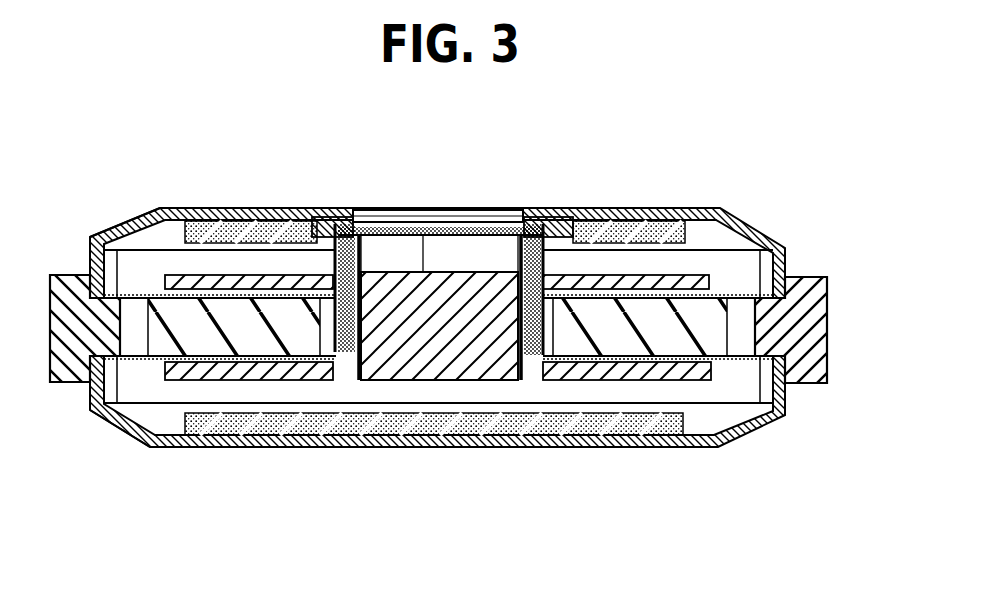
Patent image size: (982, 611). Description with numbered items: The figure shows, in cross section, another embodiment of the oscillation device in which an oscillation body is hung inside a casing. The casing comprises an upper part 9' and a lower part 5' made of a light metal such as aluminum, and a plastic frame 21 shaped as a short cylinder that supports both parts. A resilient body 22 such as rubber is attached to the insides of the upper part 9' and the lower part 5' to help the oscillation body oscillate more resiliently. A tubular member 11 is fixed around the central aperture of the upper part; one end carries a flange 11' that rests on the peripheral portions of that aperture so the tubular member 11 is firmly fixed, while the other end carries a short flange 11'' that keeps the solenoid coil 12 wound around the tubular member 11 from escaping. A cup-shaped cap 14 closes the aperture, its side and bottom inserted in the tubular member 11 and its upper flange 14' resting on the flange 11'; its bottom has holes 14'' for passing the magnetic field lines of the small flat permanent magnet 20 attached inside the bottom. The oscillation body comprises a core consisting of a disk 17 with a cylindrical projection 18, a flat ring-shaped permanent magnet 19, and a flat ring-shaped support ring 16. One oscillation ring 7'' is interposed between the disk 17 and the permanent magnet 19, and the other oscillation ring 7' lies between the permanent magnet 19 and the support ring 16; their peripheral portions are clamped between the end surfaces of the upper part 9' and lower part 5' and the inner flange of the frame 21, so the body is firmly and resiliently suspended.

The lower part 5' is at (437, 371).
The oscillation ring 7' is at (125, 182).
The oscillation ring 7'' is at (120, 472).
The upper part 9' is at (250, 185).
The resilient body 22 is at (250, 228).
The solenoid coil 12 is at (326, 216).
The flange 11' is at (359, 239).
The tubular member 11 is at (388, 253).
The cap 14 is at (438, 174).
The magnetic disk 20 is at (490, 224).
The cylindrical projection 18 is at (500, 275).
The flange 14' is at (568, 182).
The support ring 16 is at (615, 278).
The plastic frame 21 is at (810, 318).
The permanent magnet 19 is at (222, 337).
The holes 14'' is at (440, 381).
The short flange 11'' is at (549, 384).
The disk 17 is at (607, 368).